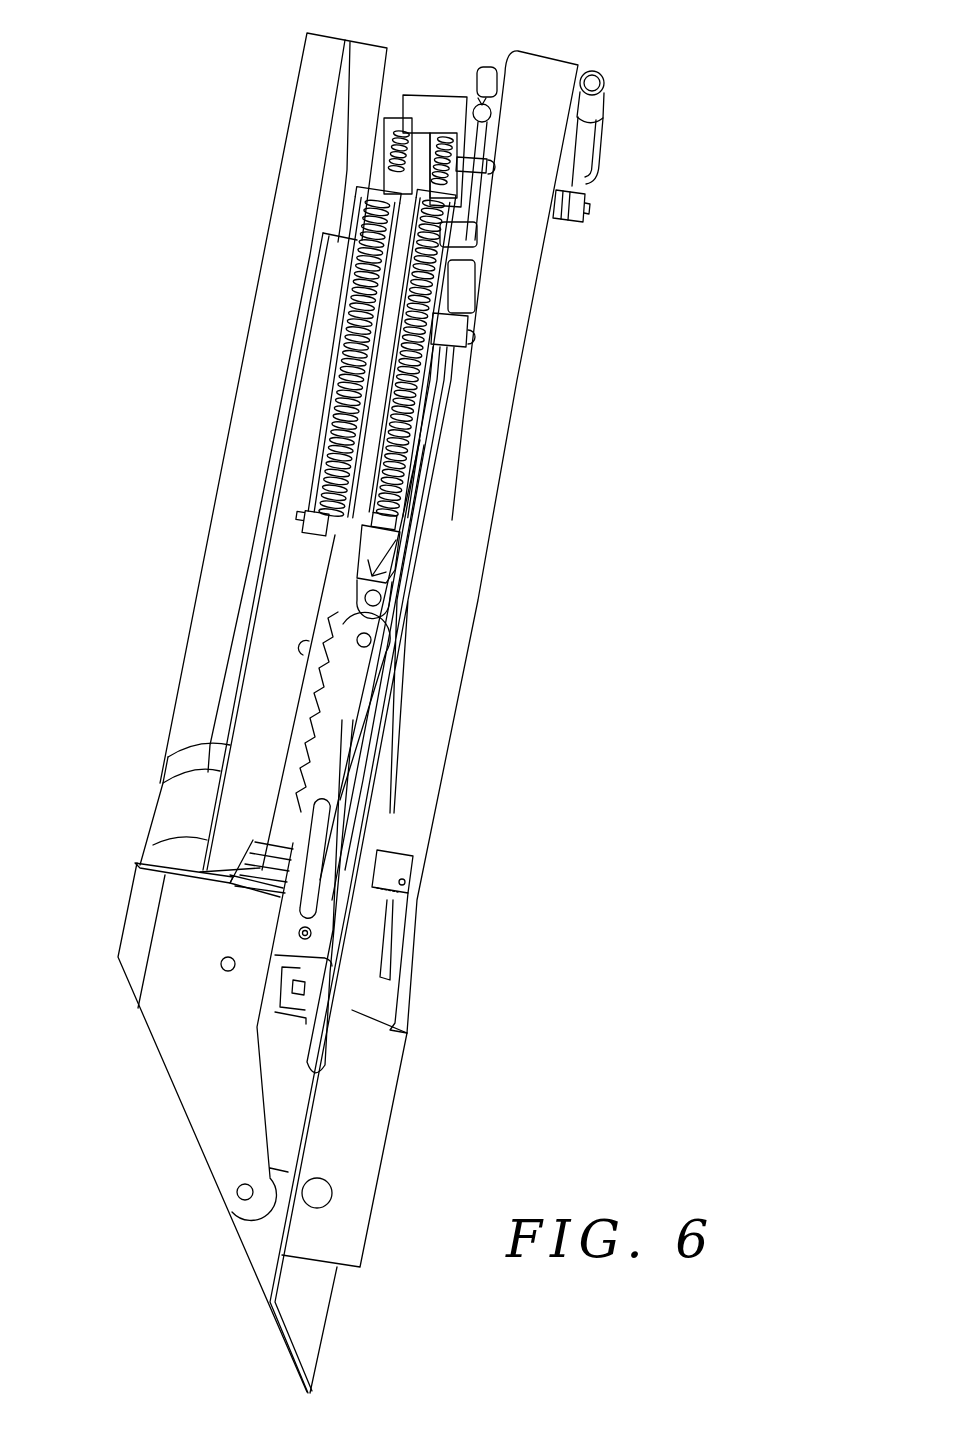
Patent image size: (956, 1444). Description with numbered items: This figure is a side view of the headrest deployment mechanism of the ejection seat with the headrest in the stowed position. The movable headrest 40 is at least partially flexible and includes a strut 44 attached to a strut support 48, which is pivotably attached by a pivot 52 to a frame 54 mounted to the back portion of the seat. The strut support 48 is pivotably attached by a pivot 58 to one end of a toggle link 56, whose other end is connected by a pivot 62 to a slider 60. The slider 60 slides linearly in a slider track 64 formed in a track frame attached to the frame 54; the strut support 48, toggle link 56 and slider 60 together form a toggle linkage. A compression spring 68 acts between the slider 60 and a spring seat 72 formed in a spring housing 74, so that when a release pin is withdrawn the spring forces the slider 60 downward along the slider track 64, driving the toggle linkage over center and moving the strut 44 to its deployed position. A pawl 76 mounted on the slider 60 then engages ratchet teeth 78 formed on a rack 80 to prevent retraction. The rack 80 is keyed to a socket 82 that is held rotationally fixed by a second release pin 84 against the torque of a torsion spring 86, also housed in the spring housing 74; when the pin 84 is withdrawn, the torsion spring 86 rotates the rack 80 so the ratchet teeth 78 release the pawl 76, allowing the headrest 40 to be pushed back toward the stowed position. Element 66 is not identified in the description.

The movable headrest 40 is at (212, 412).
The strut 44 is at (283, 188).
The strut support 48 is at (180, 1052).
The pivot 52 is at (237, 1190).
The frame 54 is at (507, 379).
The toggle link 56 is at (358, 672).
The pivot 58 is at (220, 962).
The slider 60 is at (383, 617).
The pivot 62 is at (371, 641).
The slider track 64 is at (325, 842).
The screw 66 is at (320, 927).
The compression spring 68 is at (352, 337).
The spring seat 72 is at (433, 210).
The spring housing 74 is at (440, 325).
The pawl 76 is at (372, 575).
The ratchet teeth 78 is at (322, 710).
The rack 80 is at (383, 313).
The socket 82 is at (462, 105).
The release pin 84 is at (474, 167).
The torsion spring 86 is at (398, 140).